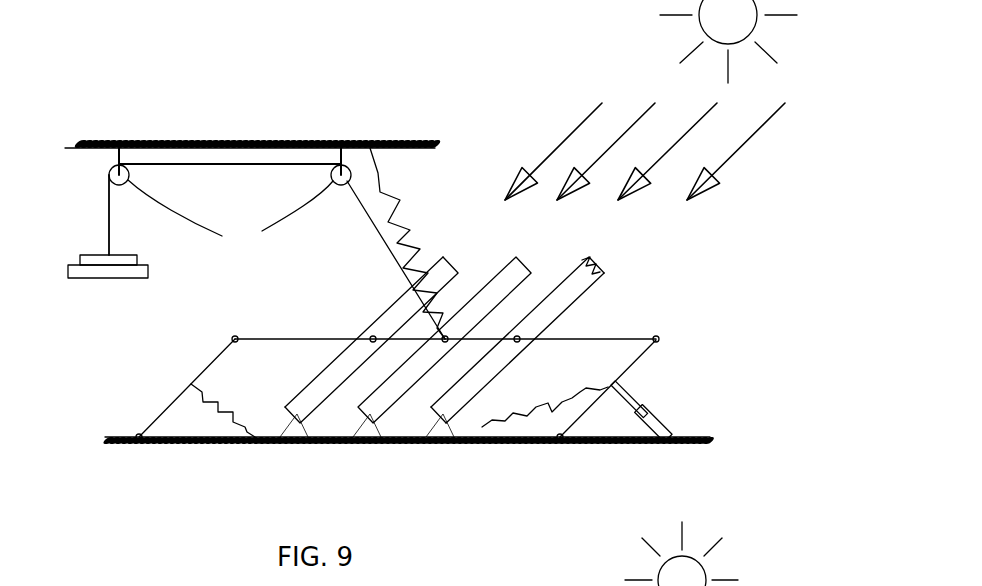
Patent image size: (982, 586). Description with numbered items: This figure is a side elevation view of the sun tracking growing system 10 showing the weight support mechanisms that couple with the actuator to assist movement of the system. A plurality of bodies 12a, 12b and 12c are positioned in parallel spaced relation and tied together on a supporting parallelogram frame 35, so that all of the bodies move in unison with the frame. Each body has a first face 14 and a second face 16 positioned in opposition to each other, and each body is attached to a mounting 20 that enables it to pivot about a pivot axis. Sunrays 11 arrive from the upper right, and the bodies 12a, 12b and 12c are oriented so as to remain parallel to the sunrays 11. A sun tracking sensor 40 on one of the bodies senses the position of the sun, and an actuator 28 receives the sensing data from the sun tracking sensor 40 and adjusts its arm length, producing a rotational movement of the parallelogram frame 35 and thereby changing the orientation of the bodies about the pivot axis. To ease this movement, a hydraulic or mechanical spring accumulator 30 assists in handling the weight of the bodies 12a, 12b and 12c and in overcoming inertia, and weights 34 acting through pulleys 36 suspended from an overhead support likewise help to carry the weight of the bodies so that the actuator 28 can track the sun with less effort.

The sun tracking growing system 10 is at (343, 97).
The sunray 11 is at (732, 157).
The body 12a is at (350, 373).
The body 12b is at (360, 407).
The body 12c is at (551, 374).
The first face 14 is at (379, 318).
The second face 16 is at (558, 311).
The mounting 20 is at (367, 437).
The actuator 28 is at (662, 416).
The spring accumulator 30 is at (412, 231).
The weight 34 is at (93, 273).
The supporting parallelogram frame 35 is at (204, 372).
The pulley 36 is at (230, 217).
The sun tracking sensor 40 is at (577, 255).